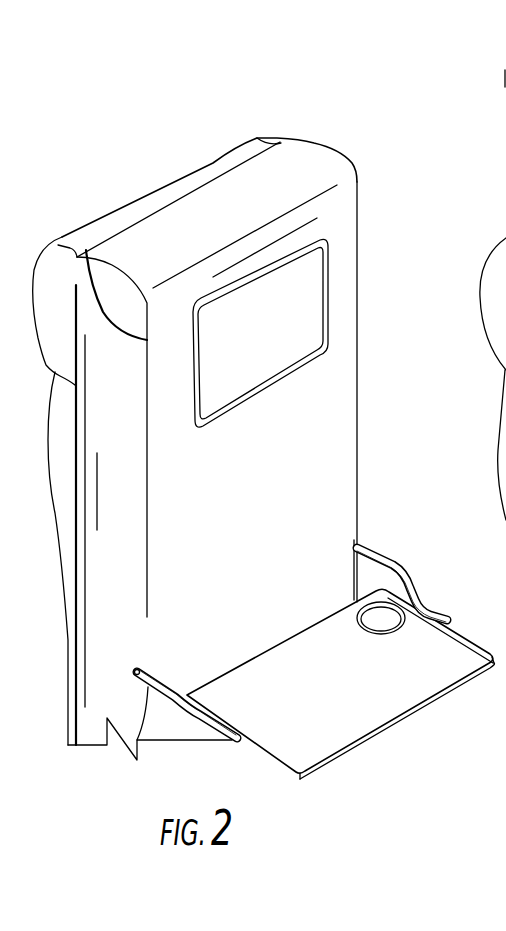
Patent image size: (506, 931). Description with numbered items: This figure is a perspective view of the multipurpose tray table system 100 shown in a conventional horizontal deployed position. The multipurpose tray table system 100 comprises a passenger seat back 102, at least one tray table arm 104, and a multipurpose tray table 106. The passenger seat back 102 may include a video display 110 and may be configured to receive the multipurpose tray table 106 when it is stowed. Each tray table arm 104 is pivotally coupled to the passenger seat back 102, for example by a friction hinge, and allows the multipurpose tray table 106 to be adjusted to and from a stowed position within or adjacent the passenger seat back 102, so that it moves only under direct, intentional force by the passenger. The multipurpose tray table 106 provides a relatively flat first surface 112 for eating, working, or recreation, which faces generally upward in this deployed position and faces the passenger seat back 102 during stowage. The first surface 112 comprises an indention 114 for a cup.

The multipurpose tray table system 100 is at (176, 127).
The passenger seat back 102 is at (86, 250).
The tray table arm 104 is at (392, 570).
The multipurpose tray table 106 is at (365, 738).
The video display 110 is at (303, 243).
The first surface 112 is at (413, 688).
The indention 114 is at (387, 600).